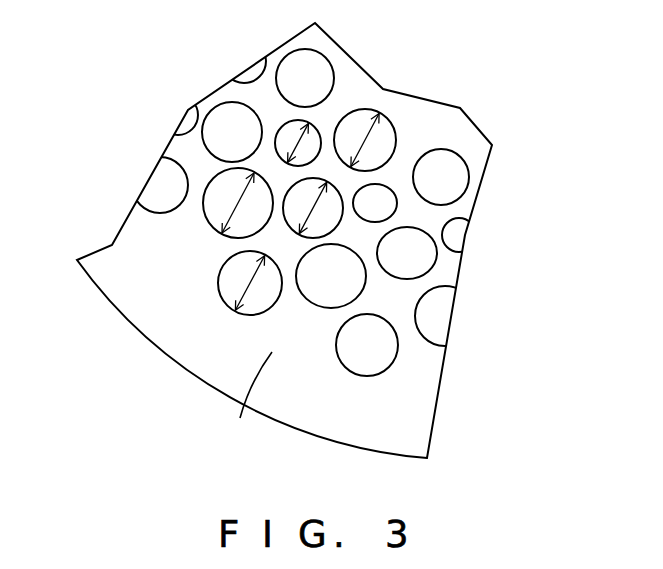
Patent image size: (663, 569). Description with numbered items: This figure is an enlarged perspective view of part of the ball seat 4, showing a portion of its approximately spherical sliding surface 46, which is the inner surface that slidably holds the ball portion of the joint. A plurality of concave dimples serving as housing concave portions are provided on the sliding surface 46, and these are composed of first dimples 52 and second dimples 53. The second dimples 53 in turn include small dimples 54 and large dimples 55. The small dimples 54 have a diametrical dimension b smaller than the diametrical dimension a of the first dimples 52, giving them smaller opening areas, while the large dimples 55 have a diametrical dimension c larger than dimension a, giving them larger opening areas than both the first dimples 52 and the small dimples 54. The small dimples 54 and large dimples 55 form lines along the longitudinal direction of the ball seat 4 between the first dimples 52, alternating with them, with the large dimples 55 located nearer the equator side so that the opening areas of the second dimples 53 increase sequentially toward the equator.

The ball seat 4 is at (289, 240).
The sliding surface 46 is at (251, 400).
The first dimples 52 is at (331, 57).
The second dimples 53 is at (345, 153).
The small dimples 54 is at (289, 125).
The large dimples 55 is at (208, 221).